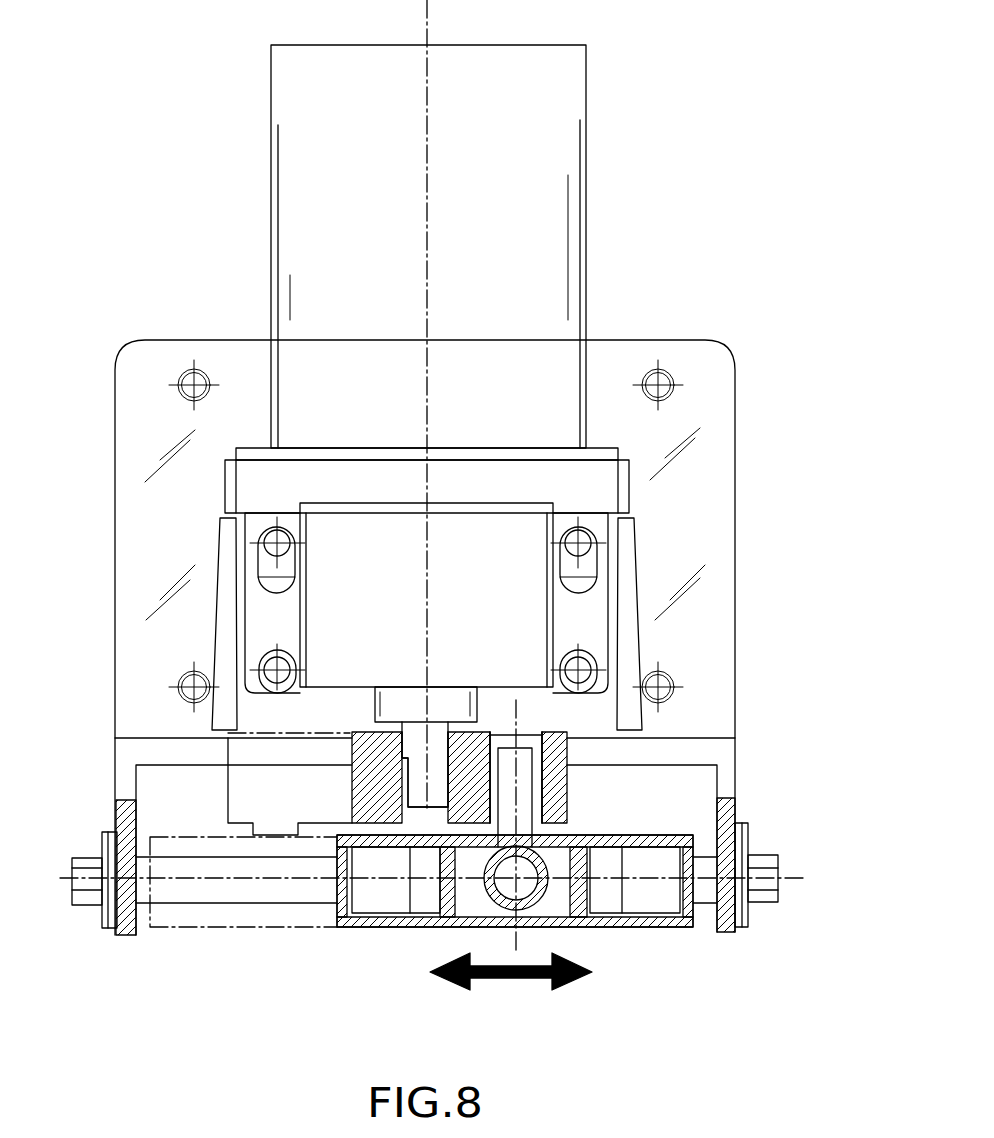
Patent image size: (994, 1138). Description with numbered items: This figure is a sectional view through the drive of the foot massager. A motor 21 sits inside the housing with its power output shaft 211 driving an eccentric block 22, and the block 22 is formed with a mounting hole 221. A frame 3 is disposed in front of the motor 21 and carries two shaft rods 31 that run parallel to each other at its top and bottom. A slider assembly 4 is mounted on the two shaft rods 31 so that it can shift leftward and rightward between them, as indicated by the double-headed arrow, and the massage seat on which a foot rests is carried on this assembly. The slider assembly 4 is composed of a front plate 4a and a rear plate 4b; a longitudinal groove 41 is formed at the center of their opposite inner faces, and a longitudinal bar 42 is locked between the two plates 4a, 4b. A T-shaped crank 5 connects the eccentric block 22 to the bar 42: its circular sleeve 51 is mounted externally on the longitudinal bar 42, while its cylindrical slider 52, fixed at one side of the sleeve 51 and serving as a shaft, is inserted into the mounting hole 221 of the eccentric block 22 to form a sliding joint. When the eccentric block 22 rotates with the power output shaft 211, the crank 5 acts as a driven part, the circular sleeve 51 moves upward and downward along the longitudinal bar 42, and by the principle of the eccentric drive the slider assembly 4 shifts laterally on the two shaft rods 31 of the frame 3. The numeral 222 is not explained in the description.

The motor 21 is at (307, 158).
The power output shaft 211 is at (418, 740).
The eccentric block 22 is at (377, 792).
The mounting hole 221 is at (528, 737).
The holder block 222 is at (438, 746).
The crank 5 is at (668, 754).
The circular sleeve 51 is at (548, 856).
The cylindrical slider 52 is at (517, 786).
The frame 3 is at (124, 824).
The shaft rods 31 is at (234, 890).
The slider assembly 4 is at (496, 915).
The front plate 4a is at (808, 875).
The rear plate 4b is at (693, 857).
The longitudinal groove 41 is at (545, 905).
The longitudinal bar 42 is at (524, 932).